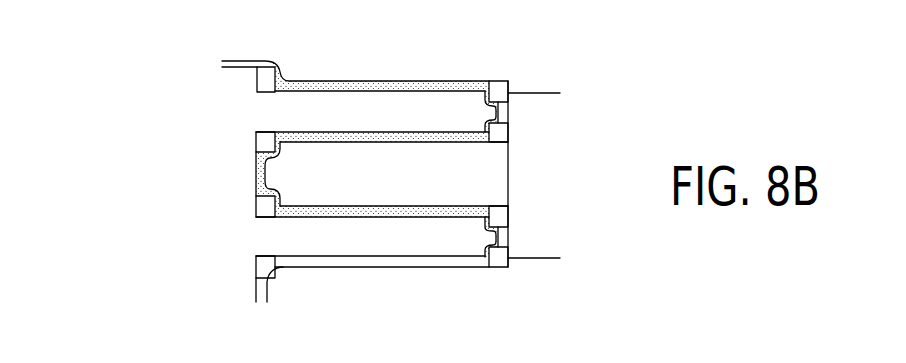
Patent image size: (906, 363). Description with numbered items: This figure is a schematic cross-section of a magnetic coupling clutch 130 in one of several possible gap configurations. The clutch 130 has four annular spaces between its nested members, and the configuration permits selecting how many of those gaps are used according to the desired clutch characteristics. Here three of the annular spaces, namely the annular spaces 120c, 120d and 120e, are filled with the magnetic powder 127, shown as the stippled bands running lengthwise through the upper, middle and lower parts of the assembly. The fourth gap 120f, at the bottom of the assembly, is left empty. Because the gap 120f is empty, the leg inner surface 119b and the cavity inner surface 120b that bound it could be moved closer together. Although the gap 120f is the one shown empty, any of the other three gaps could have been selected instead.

The clutch 130 is at (160, 163).
The magnetic powder 127 is at (312, 89).
The annular space 120c is at (441, 86).
The annular space 120d is at (460, 140).
The annular space 120e is at (453, 212).
The gap 120f is at (443, 263).
The leg inner surface 119b is at (366, 257).
The cavity inner surface 120b is at (327, 263).